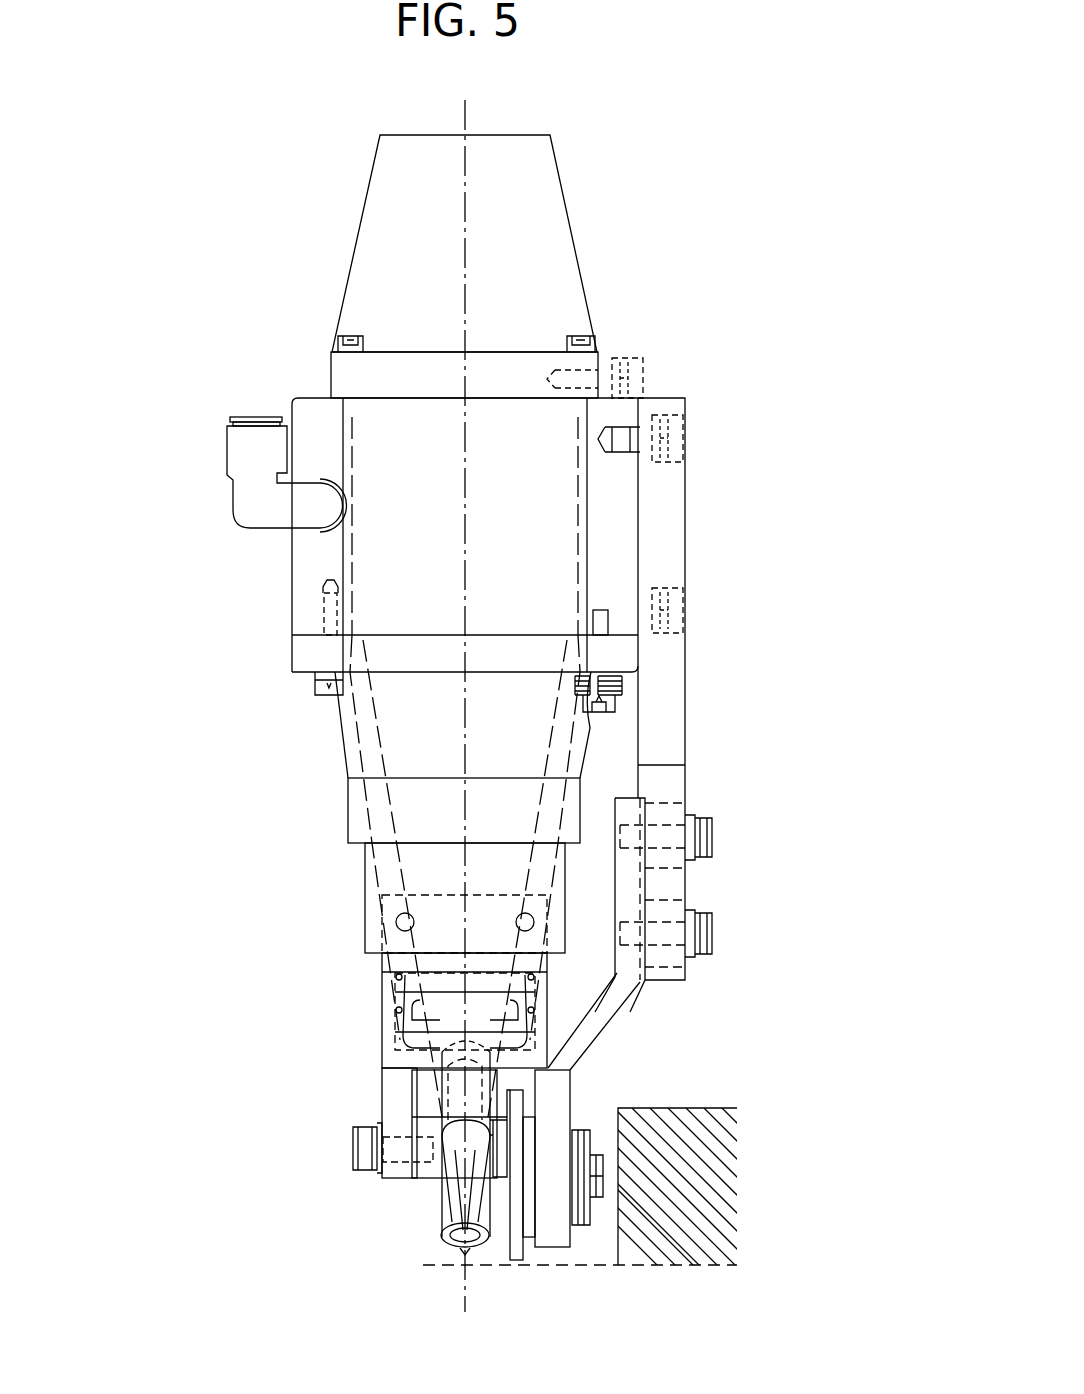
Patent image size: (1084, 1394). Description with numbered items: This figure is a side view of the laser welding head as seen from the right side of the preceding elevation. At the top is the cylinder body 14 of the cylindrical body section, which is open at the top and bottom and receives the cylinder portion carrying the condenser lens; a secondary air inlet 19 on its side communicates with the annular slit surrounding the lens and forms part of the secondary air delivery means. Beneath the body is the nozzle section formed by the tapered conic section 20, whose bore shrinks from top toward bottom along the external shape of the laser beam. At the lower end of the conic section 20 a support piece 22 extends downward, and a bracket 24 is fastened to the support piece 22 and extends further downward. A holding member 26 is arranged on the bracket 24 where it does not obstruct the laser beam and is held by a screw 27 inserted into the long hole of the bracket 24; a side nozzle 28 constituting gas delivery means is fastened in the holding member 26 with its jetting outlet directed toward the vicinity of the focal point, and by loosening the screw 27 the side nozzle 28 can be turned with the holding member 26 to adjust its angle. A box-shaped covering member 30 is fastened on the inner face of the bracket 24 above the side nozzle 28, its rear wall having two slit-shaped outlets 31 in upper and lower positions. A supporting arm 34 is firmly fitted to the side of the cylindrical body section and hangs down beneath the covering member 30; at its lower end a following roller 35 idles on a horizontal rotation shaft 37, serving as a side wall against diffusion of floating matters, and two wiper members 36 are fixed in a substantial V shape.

The cylinder body 14 is at (315, 577).
The secondary air inlet 19 is at (257, 447).
The conic section 20 is at (340, 738).
The support piece 22 is at (380, 878).
The bracket 24 is at (405, 1097).
The holding member 26 is at (430, 1163).
The screw 27 is at (353, 1150).
The side nozzle 28 is at (445, 1213).
The covering member 30 is at (540, 1017).
The slit-shaped outlets 31 is at (425, 1018).
The supporting arm 34 is at (622, 802).
The following roller 35 is at (517, 1253).
The wiper members 36 is at (500, 1168).
The rotation shaft 37 is at (593, 1173).